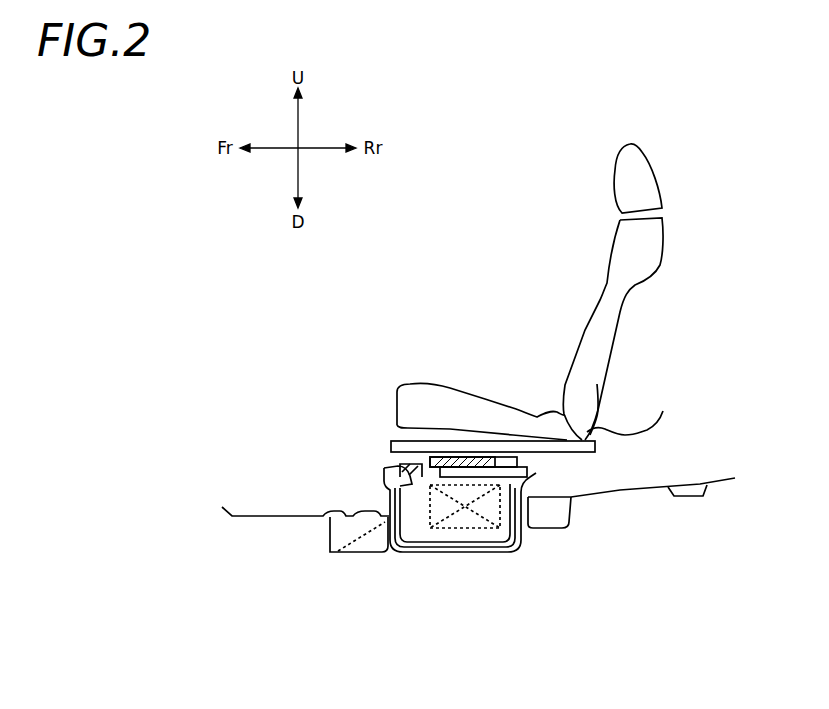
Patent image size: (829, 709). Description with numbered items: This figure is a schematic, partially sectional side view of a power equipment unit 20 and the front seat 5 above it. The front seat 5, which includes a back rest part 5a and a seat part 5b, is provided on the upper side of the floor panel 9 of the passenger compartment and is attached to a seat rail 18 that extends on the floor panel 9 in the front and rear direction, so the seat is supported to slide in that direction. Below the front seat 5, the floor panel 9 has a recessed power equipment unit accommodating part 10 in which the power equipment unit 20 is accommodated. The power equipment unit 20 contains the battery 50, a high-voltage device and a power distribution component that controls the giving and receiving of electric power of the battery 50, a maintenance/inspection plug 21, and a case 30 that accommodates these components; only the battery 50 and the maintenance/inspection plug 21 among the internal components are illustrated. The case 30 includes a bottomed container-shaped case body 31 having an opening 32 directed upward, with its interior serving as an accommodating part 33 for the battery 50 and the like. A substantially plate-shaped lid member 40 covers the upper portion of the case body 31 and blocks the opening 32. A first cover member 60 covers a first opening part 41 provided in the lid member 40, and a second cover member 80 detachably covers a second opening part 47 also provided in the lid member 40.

The front seat 5 is at (574, 292).
The back rest part 5a is at (606, 318).
The seat part 5b is at (525, 420).
The floor panel 9 is at (721, 479).
The power equipment unit accommodating part 10 is at (450, 513).
The seat rail 18 is at (636, 411).
The power equipment unit 20 is at (418, 535).
The maintenance/inspection plug 21 is at (350, 553).
The case 30 is at (524, 546).
The case body 31 is at (470, 553).
The opening 32 is at (383, 480).
The accommodating part 33 is at (408, 553).
The lid member 40 is at (392, 478).
The first opening part 41 is at (505, 553).
The second opening part 47 is at (408, 470).
The battery 50 is at (440, 553).
The first cover member 60 is at (462, 466).
The second cover member 80 is at (422, 466).